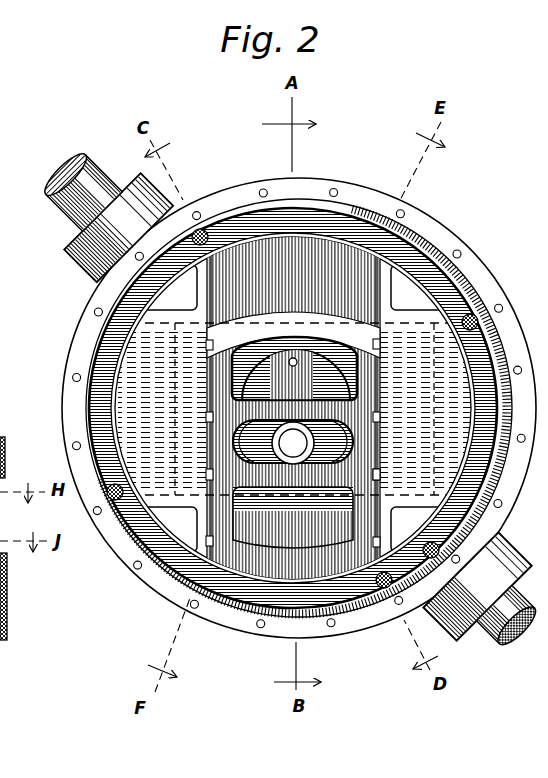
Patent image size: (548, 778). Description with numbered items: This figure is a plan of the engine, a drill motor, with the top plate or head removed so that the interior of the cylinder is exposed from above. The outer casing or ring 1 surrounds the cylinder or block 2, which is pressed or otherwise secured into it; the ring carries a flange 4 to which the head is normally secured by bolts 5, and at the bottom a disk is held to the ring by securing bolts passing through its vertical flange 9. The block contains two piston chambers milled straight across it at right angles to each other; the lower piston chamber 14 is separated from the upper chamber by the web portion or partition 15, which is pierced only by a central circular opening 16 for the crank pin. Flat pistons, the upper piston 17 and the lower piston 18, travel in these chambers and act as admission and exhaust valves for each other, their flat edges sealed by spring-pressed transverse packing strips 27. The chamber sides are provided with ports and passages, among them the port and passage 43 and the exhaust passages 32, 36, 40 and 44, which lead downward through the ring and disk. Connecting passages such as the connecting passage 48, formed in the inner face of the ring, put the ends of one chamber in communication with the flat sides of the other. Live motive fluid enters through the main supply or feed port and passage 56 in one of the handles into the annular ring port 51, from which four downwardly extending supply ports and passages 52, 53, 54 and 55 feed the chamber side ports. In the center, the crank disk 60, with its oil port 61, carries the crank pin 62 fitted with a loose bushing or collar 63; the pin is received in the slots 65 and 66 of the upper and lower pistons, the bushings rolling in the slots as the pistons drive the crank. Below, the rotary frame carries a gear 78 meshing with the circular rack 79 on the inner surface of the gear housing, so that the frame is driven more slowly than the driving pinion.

The outer casing or ring 1 is at (5, 396).
The cylinder or block 2 is at (145, 337).
The flange 4 is at (237, 624).
The bolts 5 is at (5, 419).
The vertical flange 9 is at (7, 605).
The lower piston chamber 14 is at (295, 409).
The web portion or partition 15 is at (303, 358).
The central circular opening 16 is at (351, 387).
The upper piston 17 is at (380, 476).
The lower piston 18 is at (0, 515).
The packing strips 27 is at (206, 345).
The exhaust port and passage 32 is at (100, 323).
The exhaust port and passage 36 is at (497, 500).
The exhaust port and passage 40 is at (418, 210).
The port and passage 43 is at (293, 280).
The exhaust port and passage 44 is at (171, 616).
The connecting passage 48 is at (5, 490).
The ring port 51 is at (173, 562).
The supply port and passage 52 is at (478, 314).
The supply port and passage 53 is at (203, 229).
The supply port and passage 54 is at (114, 521).
The supply port and passage 55 is at (385, 620).
The main supply or feed port and passage 56 is at (440, 556).
The crank disk 60 is at (233, 437).
The oil port 61 is at (330, 345).
The crank pin 62 is at (314, 445).
The bushing or collar 63 is at (353, 432).
The slot 65 is at (233, 453).
The slot 66 is at (232, 383).
The gear 78 is at (8, 691).
The circular rack 79 is at (2, 648).